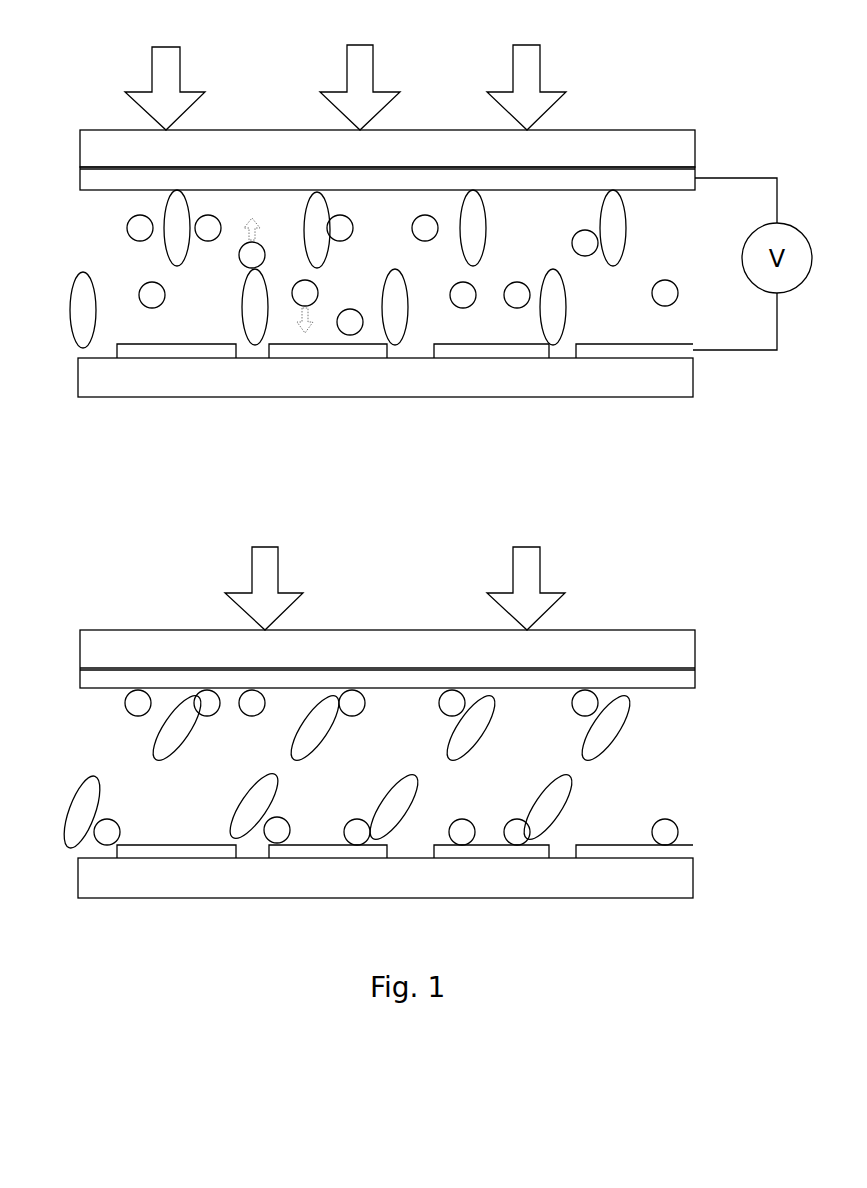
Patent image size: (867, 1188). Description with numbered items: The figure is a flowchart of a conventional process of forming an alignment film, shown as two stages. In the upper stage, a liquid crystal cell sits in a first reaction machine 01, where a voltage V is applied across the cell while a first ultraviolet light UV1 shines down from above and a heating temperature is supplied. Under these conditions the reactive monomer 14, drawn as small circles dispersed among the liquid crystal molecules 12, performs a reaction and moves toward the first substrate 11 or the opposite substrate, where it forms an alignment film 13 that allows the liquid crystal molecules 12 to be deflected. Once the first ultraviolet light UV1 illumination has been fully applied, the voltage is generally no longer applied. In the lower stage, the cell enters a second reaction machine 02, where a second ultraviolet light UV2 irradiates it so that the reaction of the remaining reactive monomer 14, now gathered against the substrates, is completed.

The first reaction machine 01 is at (384, 151).
The second reaction machine 02 is at (680, 642).
The first substrate 11 is at (88, 143).
The alignment film 13 is at (88, 178).
The reactive monomer 14 is at (127, 225).
The liquid crystal molecules 12 is at (80, 312).
The first ultraviolet light UV1 is at (540, 85).
The second ultraviolet light UV2 is at (540, 585).